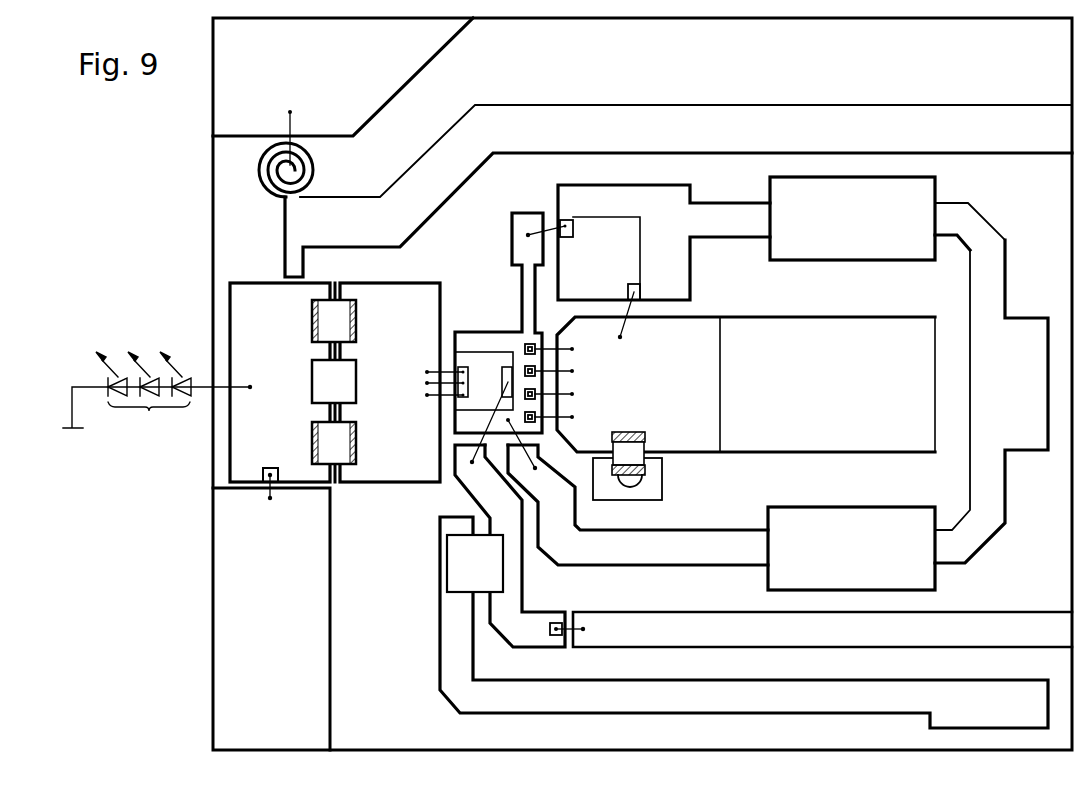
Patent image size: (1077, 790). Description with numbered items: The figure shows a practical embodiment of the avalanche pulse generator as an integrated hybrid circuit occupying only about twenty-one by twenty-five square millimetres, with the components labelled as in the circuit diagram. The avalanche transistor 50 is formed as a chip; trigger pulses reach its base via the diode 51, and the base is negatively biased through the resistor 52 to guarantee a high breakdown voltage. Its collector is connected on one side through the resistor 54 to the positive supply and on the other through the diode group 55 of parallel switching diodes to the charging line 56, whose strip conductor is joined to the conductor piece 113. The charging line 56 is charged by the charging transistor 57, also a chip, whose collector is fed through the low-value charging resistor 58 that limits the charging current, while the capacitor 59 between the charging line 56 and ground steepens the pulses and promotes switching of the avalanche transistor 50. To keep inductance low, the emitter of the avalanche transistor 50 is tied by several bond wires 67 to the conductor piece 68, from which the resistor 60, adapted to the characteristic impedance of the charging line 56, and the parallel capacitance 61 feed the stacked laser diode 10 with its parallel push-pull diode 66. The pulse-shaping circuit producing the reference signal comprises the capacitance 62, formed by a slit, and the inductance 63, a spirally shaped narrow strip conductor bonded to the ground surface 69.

The semiconductor laser diode 10 is at (157, 393).
The avalanche transistor 50 is at (499, 323).
The diode 51 is at (555, 620).
The resistor 52 is at (458, 568).
The resistor 54 is at (851, 548).
The diode group 55 is at (550, 345).
The charging line 56 is at (827, 384).
The charging transistor 57 is at (664, 262).
The charging resistor 58 is at (852, 218).
The capacitor 59 is at (638, 453).
The resistor 60 is at (334, 381).
The capacitance 61 is at (334, 382).
The capacitance 62 is at (283, 283).
The inductance 63 is at (303, 153).
The push-pull diode 66 is at (255, 470).
The bond wires 67 is at (421, 366).
The conductor piece 68 is at (386, 293).
The ground surface 69 is at (403, 66).
The conductor piece 113 is at (701, 333).